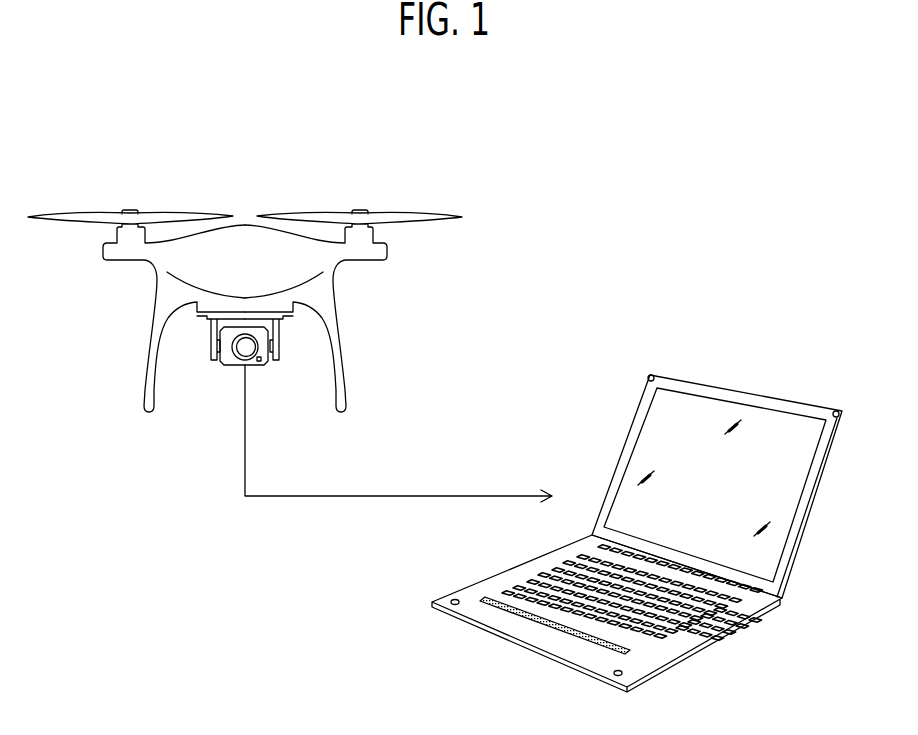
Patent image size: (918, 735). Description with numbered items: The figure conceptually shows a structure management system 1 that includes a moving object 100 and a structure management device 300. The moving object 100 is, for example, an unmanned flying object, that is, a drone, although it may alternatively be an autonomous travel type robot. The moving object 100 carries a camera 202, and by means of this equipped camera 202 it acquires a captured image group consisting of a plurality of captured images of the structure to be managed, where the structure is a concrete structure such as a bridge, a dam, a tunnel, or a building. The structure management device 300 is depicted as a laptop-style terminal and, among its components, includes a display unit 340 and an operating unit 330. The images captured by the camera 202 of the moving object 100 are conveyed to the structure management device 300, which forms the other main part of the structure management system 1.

The structure management system 1 is at (611, 152).
The moving object 100 is at (245, 282).
The camera 202 is at (252, 367).
The structure management device 300 is at (637, 504).
The operating unit 330 is at (562, 615).
The display unit 340 is at (647, 442).